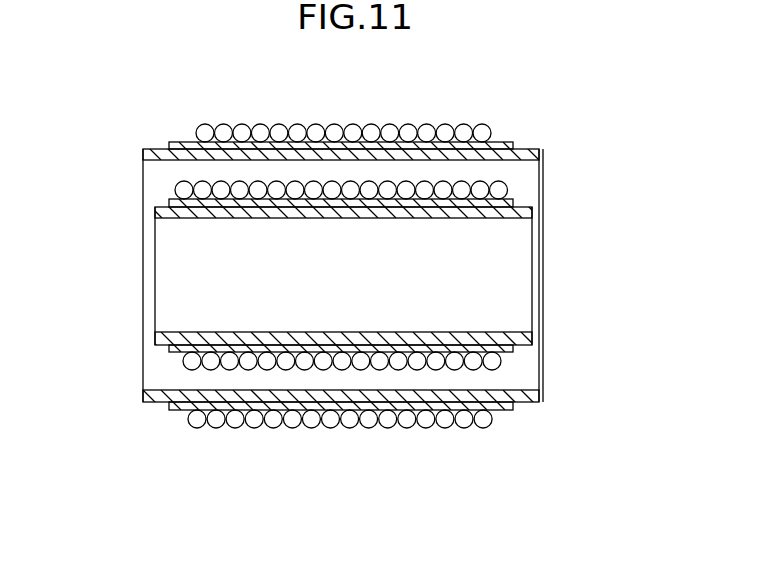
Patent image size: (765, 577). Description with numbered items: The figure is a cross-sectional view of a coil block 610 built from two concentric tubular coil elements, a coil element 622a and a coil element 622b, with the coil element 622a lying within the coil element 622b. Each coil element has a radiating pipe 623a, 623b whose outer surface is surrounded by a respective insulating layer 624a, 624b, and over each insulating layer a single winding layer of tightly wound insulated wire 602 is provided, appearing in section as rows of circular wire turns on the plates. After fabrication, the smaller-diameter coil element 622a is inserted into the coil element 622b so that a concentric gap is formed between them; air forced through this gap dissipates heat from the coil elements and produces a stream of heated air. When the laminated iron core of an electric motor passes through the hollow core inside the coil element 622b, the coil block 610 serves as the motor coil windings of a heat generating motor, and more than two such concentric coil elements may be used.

The insulated wire 602 is at (325, 132).
The coil block 610 is at (470, 114).
The coil element 622a is at (176, 380).
The coil element 622b is at (476, 224).
The radiating pipe 623a is at (540, 150).
The radiating pipe 623b is at (172, 213).
The insulating layer 624a is at (180, 142).
The insulating layer 624b is at (510, 348).